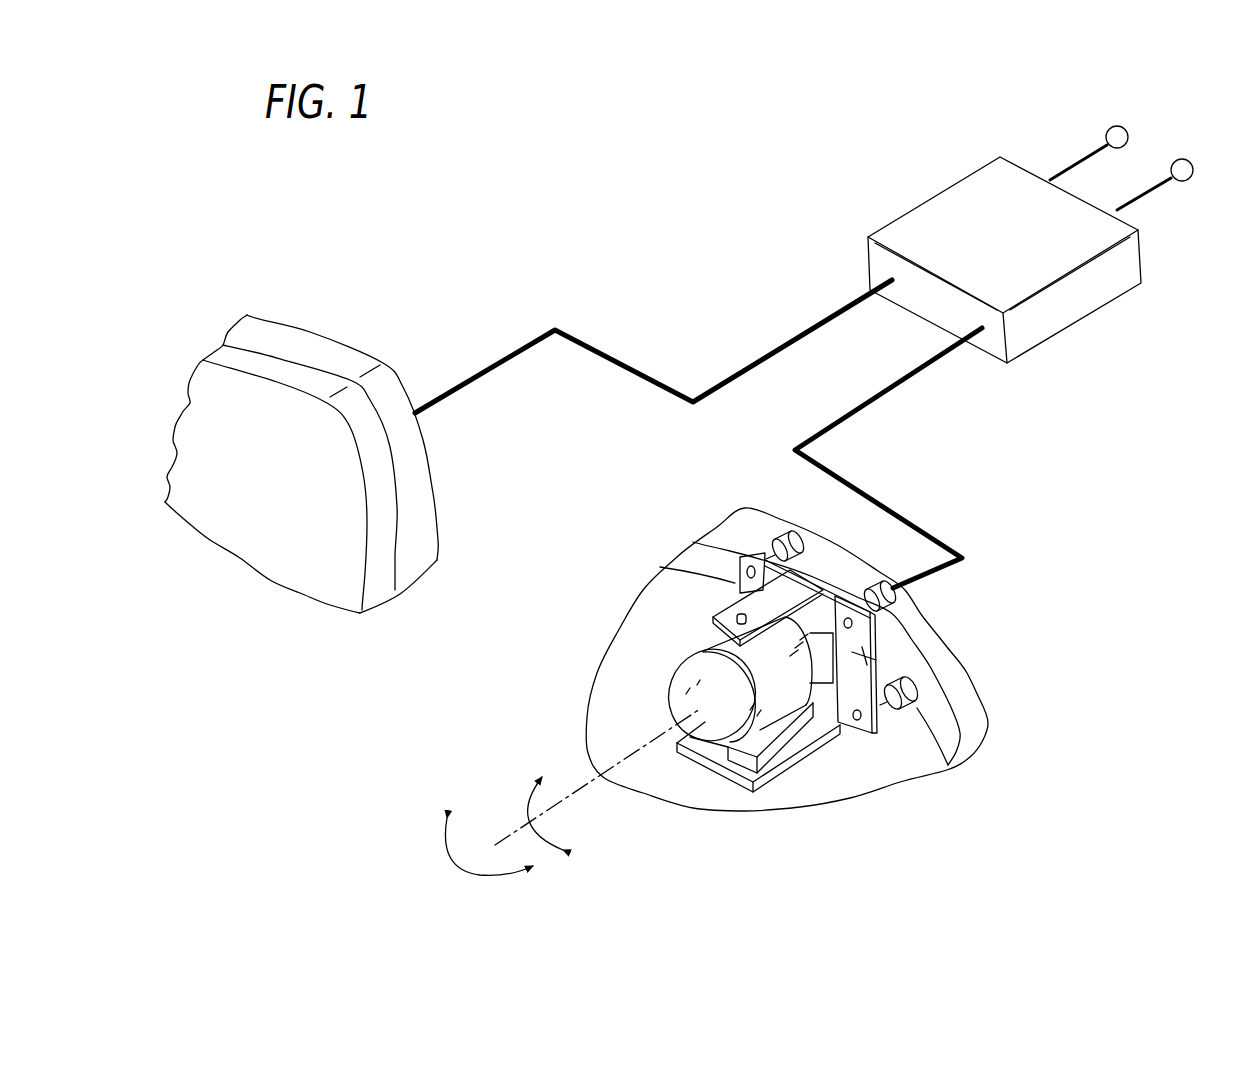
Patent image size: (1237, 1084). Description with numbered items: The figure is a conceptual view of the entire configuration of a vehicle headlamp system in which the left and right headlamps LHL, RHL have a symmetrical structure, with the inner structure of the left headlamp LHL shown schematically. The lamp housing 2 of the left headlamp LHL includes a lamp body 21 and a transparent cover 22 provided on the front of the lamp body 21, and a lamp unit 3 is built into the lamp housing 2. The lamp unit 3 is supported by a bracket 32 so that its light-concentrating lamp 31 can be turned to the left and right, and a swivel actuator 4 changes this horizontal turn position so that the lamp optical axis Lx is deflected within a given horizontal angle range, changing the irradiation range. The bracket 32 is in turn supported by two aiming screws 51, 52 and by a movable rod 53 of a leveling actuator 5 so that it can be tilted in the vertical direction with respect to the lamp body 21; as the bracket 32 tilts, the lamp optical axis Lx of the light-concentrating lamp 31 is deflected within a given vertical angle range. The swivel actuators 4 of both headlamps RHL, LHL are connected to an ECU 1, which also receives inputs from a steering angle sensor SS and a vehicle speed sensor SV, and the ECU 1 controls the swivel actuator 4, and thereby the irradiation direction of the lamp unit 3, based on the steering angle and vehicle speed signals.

The ECU (Electronic Control Unit) 1 is at (1070, 313).
The lamp housing 2 is at (422, 503).
The lamp body 21 is at (413, 568).
The transparent cover 22 is at (292, 570).
The lamp unit 3 is at (803, 770).
The light-concentrating lamp 31 is at (663, 700).
The bracket 32 is at (767, 587).
The swivel actuator 4 is at (730, 757).
The leveling actuator 5 is at (868, 667).
The aiming screw 51 is at (803, 540).
The aiming screw 52 is at (888, 582).
The movable rod 53 is at (886, 712).
The right headlamp RHL is at (303, 313).
The left headlamp LHL is at (853, 820).
The steering angle sensor SS is at (1124, 127).
The vehicle speed sensor SV is at (1191, 163).
The lamp optical axis Lx is at (540, 817).